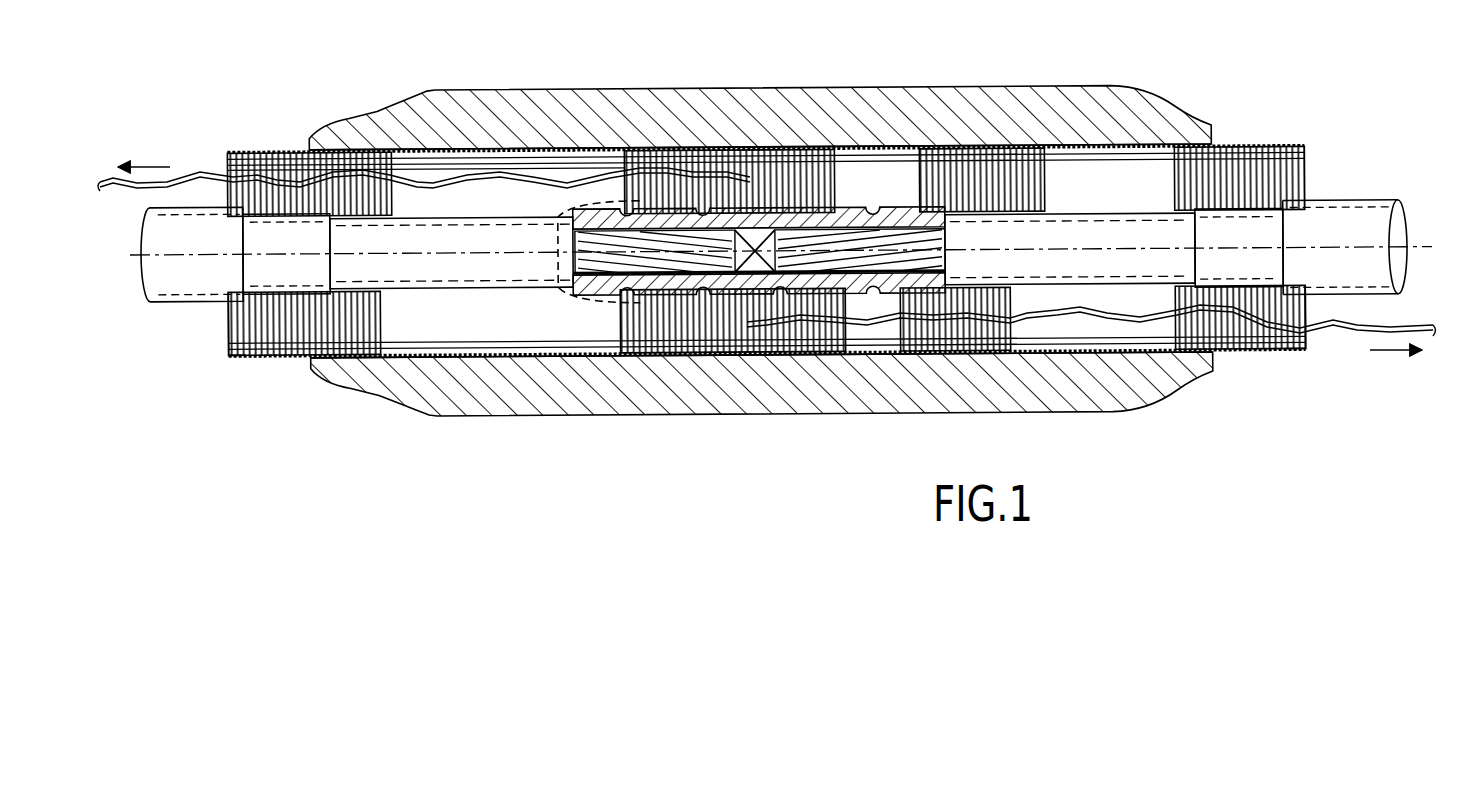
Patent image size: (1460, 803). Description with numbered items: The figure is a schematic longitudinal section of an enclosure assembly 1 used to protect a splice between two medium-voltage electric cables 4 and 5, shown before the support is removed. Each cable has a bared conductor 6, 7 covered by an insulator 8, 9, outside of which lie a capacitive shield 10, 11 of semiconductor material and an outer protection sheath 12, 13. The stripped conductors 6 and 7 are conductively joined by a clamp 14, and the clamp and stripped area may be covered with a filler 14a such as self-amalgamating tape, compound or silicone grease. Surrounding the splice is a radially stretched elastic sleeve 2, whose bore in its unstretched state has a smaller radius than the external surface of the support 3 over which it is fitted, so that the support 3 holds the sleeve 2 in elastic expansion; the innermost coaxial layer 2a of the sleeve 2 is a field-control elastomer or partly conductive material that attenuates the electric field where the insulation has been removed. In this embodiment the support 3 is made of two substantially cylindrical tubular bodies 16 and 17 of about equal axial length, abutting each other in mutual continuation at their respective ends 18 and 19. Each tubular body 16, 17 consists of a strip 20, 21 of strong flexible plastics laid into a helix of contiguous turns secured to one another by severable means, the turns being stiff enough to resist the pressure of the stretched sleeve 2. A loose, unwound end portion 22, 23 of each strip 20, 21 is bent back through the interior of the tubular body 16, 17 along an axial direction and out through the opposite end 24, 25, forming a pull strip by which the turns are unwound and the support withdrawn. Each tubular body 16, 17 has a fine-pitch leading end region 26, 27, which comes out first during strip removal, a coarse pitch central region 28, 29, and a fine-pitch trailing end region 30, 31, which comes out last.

The enclosure assembly 1 is at (378, 427).
The elastic sleeve 2 is at (510, 418).
The innermost layer 2a is at (488, 140).
The support 3 is at (1299, 136).
The electric cable 4 is at (142, 298).
The electric cable 5 is at (1418, 214).
The conductor 6 is at (578, 288).
The conductor 7 is at (872, 228).
The insulator 8 is at (505, 262).
The insulator 9 is at (1066, 234).
The capacitive shield 10 is at (262, 292).
The capacitive shield 11 is at (1228, 220).
The outer protection sheath 12 is at (190, 282).
The outer protection sheath 13 is at (1323, 210).
The clamp 14 is at (607, 288).
The filler 14a is at (858, 300).
The tubular body 16 is at (218, 365).
The tubular body 17 is at (1237, 178).
The end 18 is at (735, 355).
The end 19 is at (772, 152).
The strip 20 is at (305, 366).
The strip 21 is at (1224, 357).
The end portion 22 is at (207, 180).
The end portion 23 is at (1355, 335).
The opposite end 24 is at (292, 130).
The opposite end 25 is at (1248, 357).
The leading end region 26 is at (690, 360).
The leading end region 27 is at (818, 160).
The coarse pitch central region 28 is at (365, 165).
The coarse pitch central region 29 is at (1028, 186).
The trailing end region 30 is at (252, 158).
The trailing end region 31 is at (1280, 350).